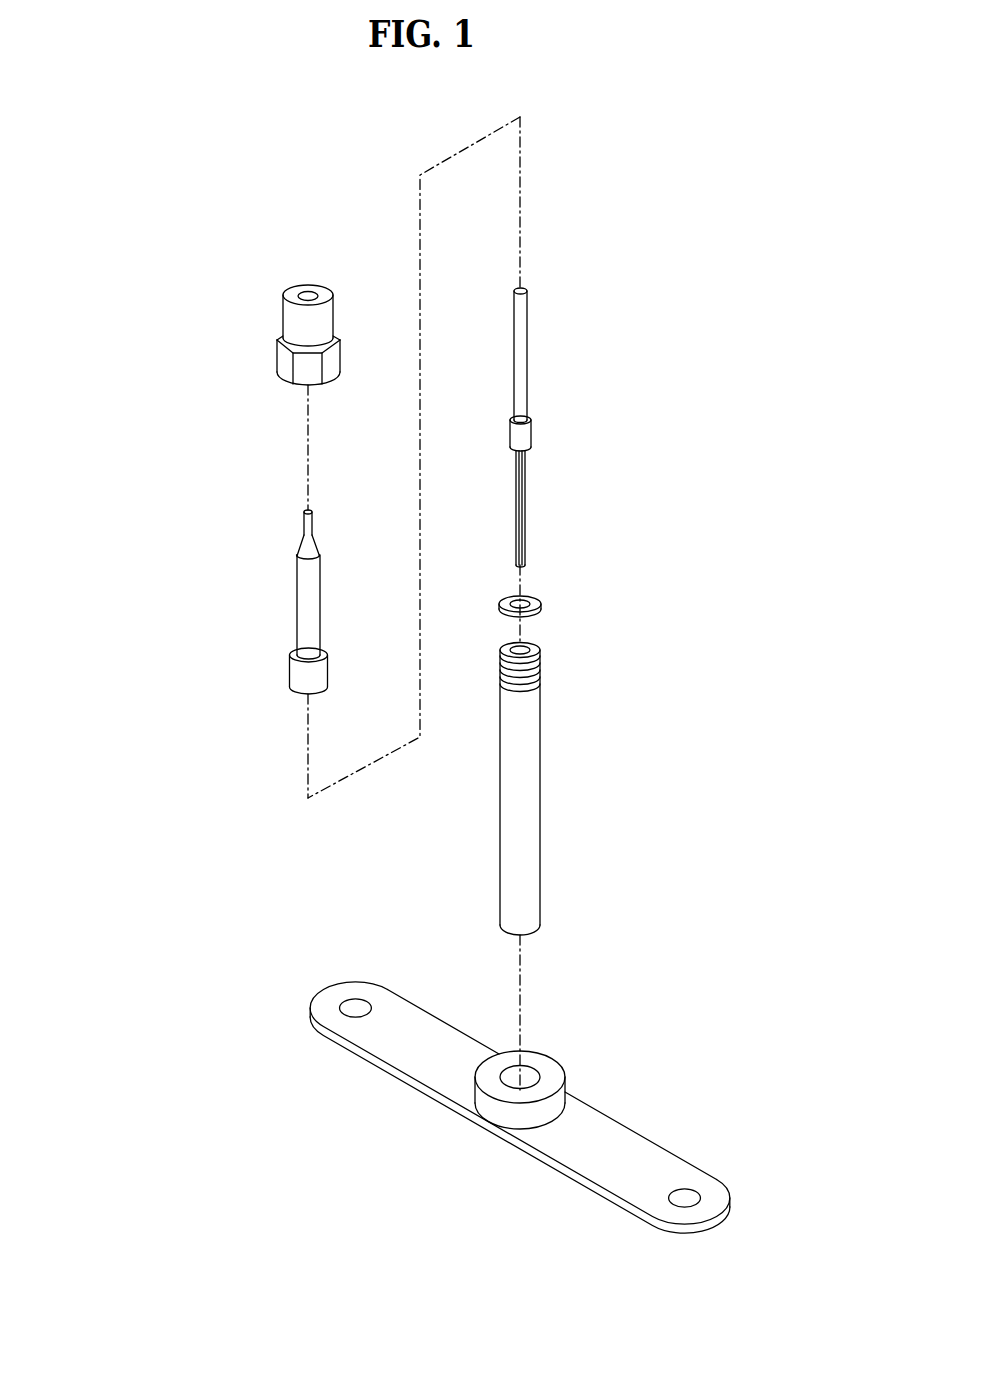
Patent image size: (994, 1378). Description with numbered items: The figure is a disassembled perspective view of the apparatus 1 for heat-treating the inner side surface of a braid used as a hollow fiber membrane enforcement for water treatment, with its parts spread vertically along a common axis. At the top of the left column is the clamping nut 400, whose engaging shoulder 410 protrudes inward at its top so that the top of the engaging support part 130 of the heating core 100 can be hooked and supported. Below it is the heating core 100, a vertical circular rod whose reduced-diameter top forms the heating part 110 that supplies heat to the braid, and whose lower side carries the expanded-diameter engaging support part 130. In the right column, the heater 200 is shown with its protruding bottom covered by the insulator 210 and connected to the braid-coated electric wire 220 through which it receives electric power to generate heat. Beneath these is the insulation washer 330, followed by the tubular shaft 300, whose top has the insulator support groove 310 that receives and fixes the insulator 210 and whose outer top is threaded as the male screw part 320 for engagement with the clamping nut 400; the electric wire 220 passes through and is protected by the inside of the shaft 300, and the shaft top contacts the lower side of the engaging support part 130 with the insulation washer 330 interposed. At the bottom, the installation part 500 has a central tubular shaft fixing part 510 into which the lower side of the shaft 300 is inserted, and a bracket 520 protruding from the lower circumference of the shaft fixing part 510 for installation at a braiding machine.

The apparatus for heat-treating an inner side surface of a braid 1 is at (100, 174).
The heating core 100 is at (234, 599).
The heating part 110 is at (305, 520).
The engaging support part 130 is at (293, 669).
The heater 200 is at (579, 427).
The insulator 210 is at (529, 437).
The electric wire 220 is at (525, 500).
The shaft 300 is at (599, 786).
The insulator support groove 310 is at (530, 648).
The male screw part 320 is at (542, 677).
The insulation washer 330 is at (533, 601).
The clamping nut 400 is at (217, 328).
The engaging shoulder 410 is at (287, 308).
The installation part 500 is at (527, 1117).
The shaft fixing part 510 is at (548, 1075).
The bracket 520 is at (617, 1143).